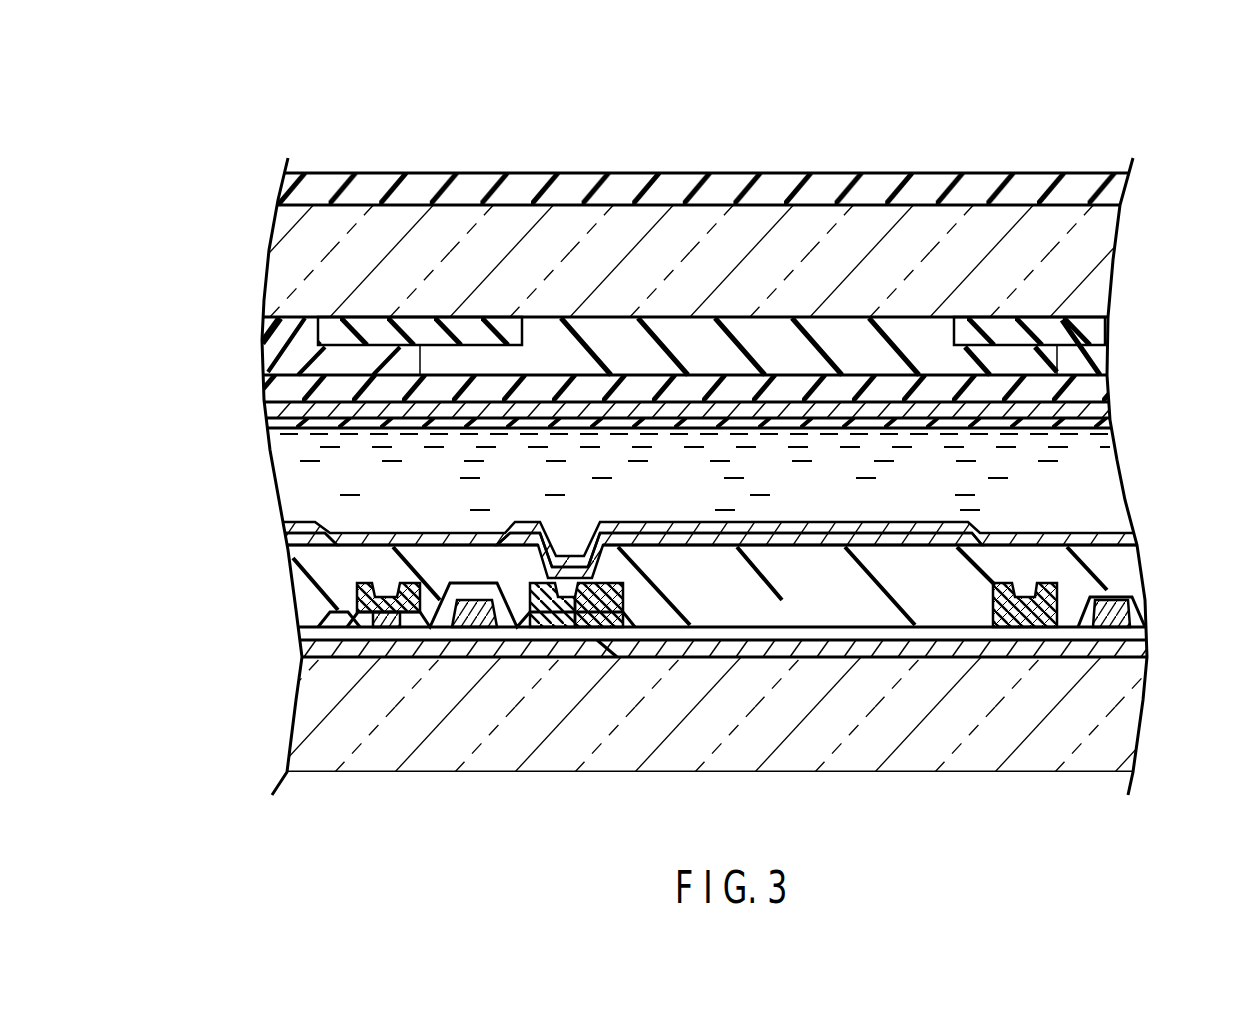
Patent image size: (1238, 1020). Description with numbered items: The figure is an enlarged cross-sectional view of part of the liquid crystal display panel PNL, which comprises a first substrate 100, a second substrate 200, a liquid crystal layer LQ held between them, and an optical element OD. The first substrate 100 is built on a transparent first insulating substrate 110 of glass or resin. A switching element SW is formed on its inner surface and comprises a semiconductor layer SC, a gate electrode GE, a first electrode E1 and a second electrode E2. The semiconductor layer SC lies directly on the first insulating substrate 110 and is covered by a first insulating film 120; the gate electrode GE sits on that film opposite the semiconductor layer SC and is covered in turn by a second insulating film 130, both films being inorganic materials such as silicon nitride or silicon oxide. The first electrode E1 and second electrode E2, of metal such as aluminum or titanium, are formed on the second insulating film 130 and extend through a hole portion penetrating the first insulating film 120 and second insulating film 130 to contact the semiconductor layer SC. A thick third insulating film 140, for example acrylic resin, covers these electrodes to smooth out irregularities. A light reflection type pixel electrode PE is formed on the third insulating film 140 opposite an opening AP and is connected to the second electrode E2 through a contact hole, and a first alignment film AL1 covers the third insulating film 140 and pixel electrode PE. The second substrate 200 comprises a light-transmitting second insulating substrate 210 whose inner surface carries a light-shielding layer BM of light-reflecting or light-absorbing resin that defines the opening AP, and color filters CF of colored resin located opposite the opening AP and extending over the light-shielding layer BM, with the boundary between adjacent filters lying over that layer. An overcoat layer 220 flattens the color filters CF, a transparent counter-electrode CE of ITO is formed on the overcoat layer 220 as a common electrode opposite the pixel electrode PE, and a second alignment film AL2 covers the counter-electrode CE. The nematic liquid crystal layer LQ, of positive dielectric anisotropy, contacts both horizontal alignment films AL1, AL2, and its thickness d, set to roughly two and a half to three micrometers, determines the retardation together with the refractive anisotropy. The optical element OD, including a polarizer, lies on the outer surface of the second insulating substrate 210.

The liquid crystal display panel PNL is at (256, 126).
The second substrate 200 is at (232, 313).
The first substrate 100 is at (282, 648).
The optical element OD is at (1120, 188).
The second insulating substrate 210 is at (1103, 272).
The light-shielding layer BM is at (388, 318).
The color filters CF is at (1003, 360).
The overcoat layer 220 is at (1108, 385).
The counter-electrode CE is at (1108, 410).
The second alignment film AL2 is at (1108, 428).
The liquid crystal layer LQ is at (1114, 490).
The first alignment film AL1 is at (1142, 538).
The pixel electrode PE is at (918, 542).
The third insulating film 140 is at (1142, 568).
The second insulating film 130 is at (1142, 597).
The first insulating film 120 is at (1142, 632).
The first insulating substrate 110 is at (1138, 715).
The gate electrode GE is at (463, 627).
The semiconductor layer SC is at (545, 614).
The first electrode E1 is at (384, 612).
The second electrode E2 is at (577, 614).
The switching element SW is at (507, 668).
The opening AP is at (944, 94).
The thickness of the liquid crystal layer d is at (190, 427).